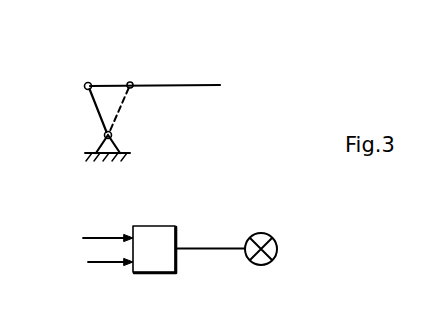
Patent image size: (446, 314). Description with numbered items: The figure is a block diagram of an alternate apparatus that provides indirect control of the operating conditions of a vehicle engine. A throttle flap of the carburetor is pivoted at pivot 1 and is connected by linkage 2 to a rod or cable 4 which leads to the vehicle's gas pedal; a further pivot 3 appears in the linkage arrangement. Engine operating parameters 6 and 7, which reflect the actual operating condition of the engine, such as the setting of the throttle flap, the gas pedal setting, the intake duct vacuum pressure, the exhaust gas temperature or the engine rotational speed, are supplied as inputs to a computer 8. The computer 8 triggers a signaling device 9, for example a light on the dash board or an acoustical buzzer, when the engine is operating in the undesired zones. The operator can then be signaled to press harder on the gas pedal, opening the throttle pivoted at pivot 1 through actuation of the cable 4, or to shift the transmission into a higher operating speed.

The pivot 1 is at (104, 134).
The linkage 2 is at (85, 85).
The pivot of dashed link 3 is at (130, 82).
The rod or cable 4 is at (190, 83).
The engine operating parameter 6 is at (90, 238).
The engine operating parameter 7 is at (101, 262).
The computer 8 is at (163, 258).
The signaling device 9 is at (266, 238).